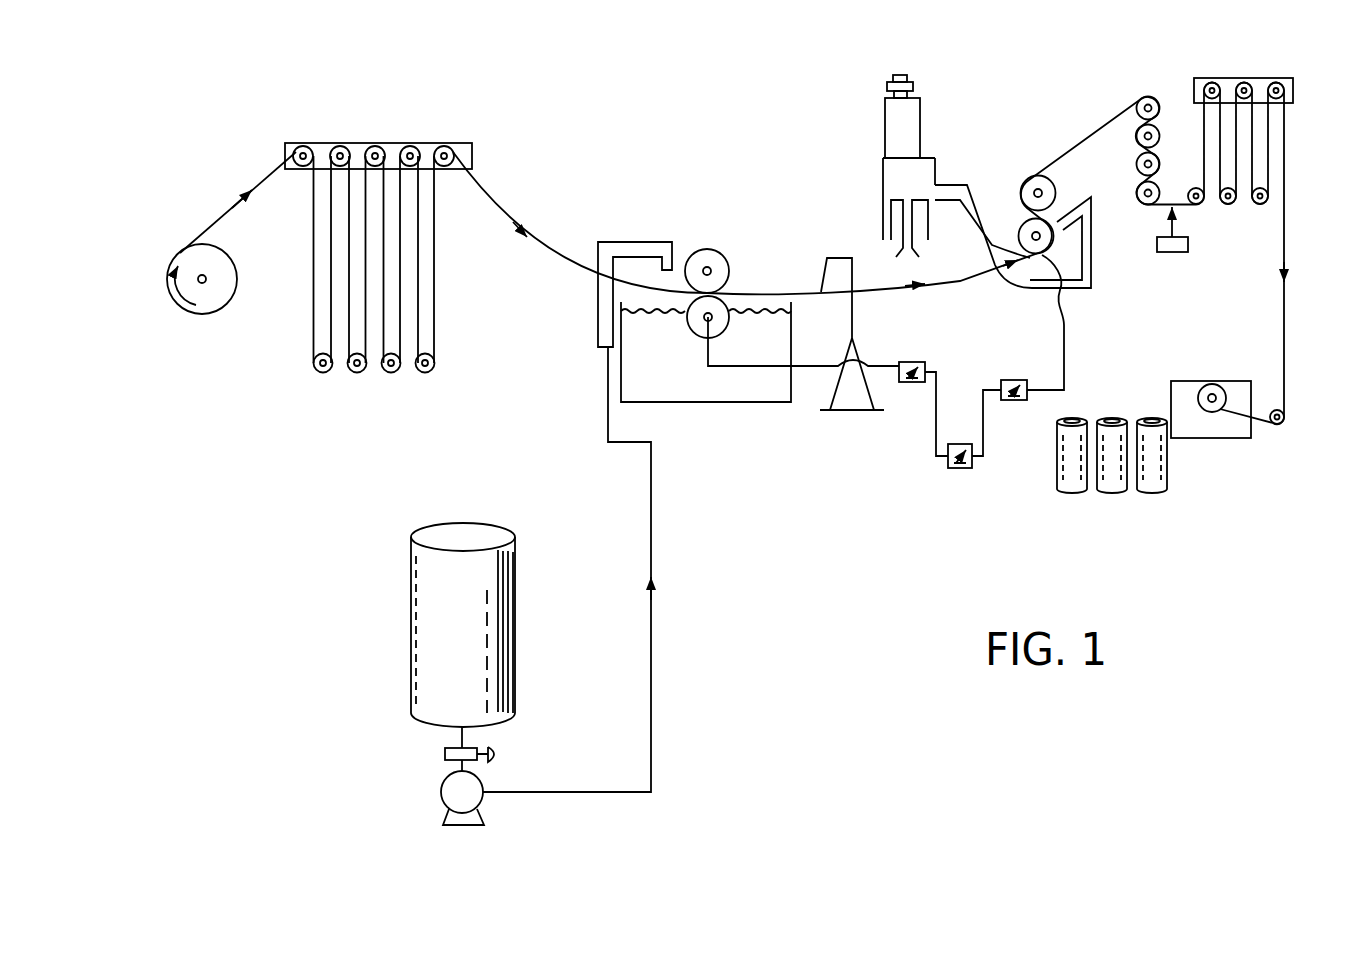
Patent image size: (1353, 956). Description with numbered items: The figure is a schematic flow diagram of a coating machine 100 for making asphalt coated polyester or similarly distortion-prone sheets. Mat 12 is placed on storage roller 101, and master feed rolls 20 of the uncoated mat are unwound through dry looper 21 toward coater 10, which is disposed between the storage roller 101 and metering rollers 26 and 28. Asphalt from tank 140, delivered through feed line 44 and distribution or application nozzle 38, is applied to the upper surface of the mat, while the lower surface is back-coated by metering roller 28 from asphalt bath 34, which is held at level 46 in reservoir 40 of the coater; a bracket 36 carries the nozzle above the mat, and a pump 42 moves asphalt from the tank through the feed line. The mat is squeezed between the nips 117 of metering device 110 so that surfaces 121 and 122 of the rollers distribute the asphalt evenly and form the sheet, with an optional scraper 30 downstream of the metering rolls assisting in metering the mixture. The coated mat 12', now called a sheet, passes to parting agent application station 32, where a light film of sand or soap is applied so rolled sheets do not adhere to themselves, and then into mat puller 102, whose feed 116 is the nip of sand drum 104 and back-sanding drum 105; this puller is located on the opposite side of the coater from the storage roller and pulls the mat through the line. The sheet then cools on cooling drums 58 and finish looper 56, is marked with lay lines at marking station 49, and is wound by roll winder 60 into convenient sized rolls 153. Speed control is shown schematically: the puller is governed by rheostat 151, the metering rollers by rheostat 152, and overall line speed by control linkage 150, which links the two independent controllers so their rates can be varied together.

The coater 10 is at (706, 224).
The mat 12 is at (443, 257).
The coated mat (sheet) 12' is at (1021, 254).
The master feed rolls 20 is at (238, 278).
The dry looper 21 is at (400, 128).
The metering roller 26 is at (723, 255).
The metering roller 28 is at (726, 329).
The scraper 30 is at (822, 289).
The parting agent application station 32 is at (946, 152).
The asphalt bath 34 is at (787, 389).
The bracket / guide 36 is at (636, 248).
The distribution or application nozzle 38 is at (674, 266).
The reservoir 40 is at (755, 403).
The pump 42 is at (480, 779).
The feed line 44 is at (652, 461).
The level 46 is at (778, 313).
The marking station 49 is at (1183, 252).
The finish looper 56 is at (1262, 65).
The cooling drums 58 is at (1145, 83).
The roll winder 60 is at (1212, 383).
The coating machine 100 is at (625, 155).
The storage roller 101 is at (214, 300).
The mat puller 102 is at (1036, 164).
The sand drum (pull roller) 104 is at (1035, 254).
The back-sanding drum (pull roller) 105 is at (1050, 181).
The metering device 110 is at (718, 232).
The feed (nips) 116 is at (1028, 212).
The nips 117 is at (728, 280).
The roller surface 121 is at (729, 263).
The roller surface 122 is at (691, 330).
The tank 140 is at (517, 598).
The control linkage (system rheostat) 150 is at (960, 468).
The puller rheostat 151 is at (1013, 400).
The metering rheostat 152 is at (913, 382).
The rolls 153 is at (1074, 483).